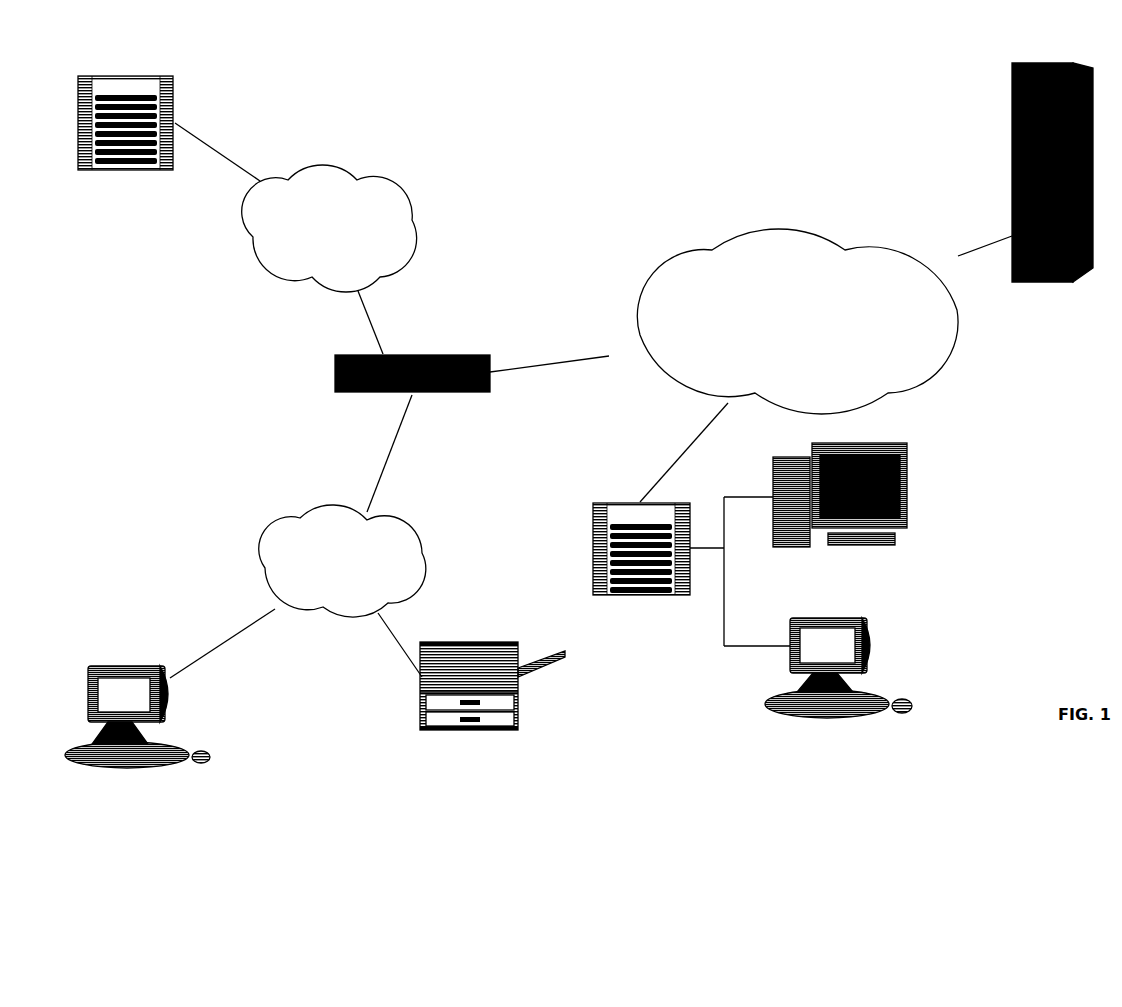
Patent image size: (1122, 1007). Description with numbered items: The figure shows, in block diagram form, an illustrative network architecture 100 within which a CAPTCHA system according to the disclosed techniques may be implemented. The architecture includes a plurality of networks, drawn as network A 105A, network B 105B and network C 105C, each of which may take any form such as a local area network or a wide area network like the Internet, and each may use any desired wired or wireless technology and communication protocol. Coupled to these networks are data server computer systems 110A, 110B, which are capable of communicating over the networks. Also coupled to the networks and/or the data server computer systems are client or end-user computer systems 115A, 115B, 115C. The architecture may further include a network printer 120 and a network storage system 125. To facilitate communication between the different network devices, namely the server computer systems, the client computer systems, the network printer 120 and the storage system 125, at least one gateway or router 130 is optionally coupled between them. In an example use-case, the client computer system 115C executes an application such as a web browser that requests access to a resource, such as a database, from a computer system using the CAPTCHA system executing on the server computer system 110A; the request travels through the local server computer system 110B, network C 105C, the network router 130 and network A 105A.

The network architecture 100 is at (560, 78).
The network A 105A is at (411, 178).
The network B 105B is at (258, 522).
The network C 105C is at (653, 253).
The server computer system 110A is at (175, 108).
The local server computer system 110B is at (593, 514).
The client computer system 115A is at (150, 766).
The client computer system 115B is at (908, 498).
The client computer system 115C is at (875, 639).
The network printer 120 is at (492, 727).
The network storage system 125 is at (1013, 145).
The gateway or router 130 is at (482, 355).